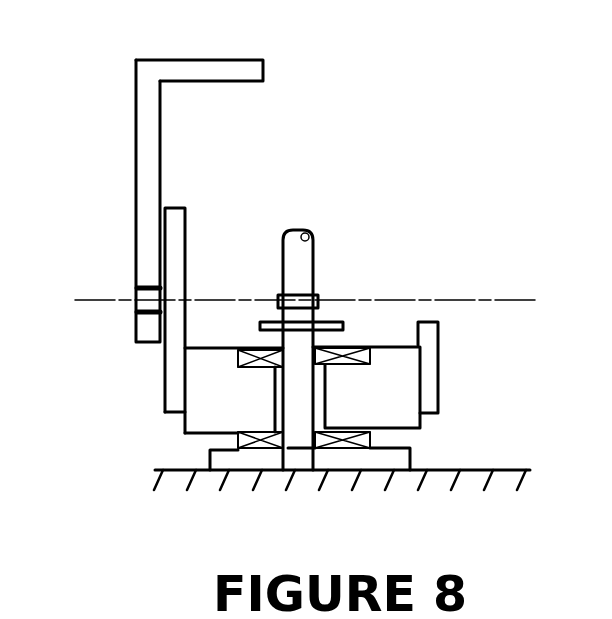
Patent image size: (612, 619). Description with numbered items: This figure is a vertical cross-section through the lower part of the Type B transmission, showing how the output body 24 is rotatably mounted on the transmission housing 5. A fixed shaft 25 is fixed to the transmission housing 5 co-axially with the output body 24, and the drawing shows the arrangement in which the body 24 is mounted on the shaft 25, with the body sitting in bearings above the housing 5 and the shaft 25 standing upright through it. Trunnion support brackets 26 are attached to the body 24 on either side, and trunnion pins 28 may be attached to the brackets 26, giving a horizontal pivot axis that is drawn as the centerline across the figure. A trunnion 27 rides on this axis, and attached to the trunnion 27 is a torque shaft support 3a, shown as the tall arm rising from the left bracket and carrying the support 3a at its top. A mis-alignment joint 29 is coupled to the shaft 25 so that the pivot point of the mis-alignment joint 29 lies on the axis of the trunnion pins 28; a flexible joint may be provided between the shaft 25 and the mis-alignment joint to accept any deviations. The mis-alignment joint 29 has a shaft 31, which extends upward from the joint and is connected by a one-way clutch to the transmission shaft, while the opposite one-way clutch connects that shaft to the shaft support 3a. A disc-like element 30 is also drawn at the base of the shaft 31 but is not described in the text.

The torque shaft support 3a is at (250, 73).
The trunnion 27 is at (143, 123).
The trunnion pins 28 is at (136, 300).
The trunnion support brackets 26 is at (165, 388).
The output body 24 is at (185, 436).
The fixed shaft 25 is at (300, 408).
The shaft of the mis-alignment joint 31 is at (305, 253).
The mis-alignment joint 29 is at (310, 318).
The disc 30 is at (345, 322).
The transmission housing 5 is at (372, 462).